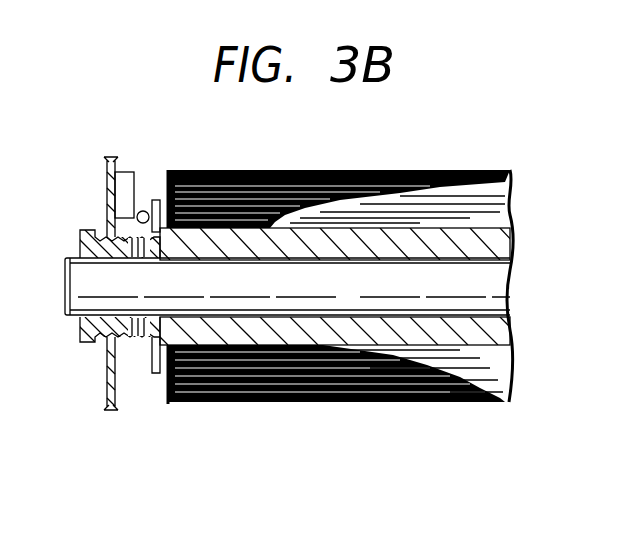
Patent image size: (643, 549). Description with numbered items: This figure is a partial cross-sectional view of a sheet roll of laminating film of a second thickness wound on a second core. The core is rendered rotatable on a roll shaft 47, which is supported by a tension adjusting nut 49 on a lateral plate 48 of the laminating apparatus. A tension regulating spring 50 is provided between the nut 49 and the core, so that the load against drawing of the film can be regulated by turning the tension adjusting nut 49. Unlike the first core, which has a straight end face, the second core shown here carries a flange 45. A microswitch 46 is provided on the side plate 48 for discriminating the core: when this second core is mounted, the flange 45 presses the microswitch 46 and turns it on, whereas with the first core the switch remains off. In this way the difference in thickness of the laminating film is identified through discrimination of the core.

The roll shaft 47 is at (510, 300).
The lateral plate 48 is at (106, 178).
The microswitch 46 is at (130, 196).
The tension adjusting nut 49 is at (82, 232).
The tension regulating spring 50 is at (133, 343).
The flange 45 is at (150, 340).